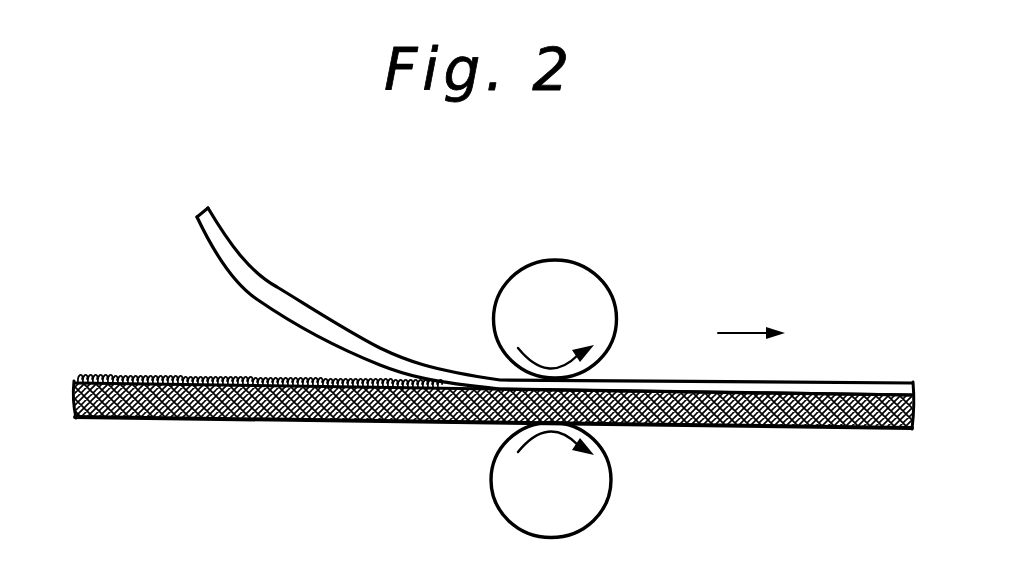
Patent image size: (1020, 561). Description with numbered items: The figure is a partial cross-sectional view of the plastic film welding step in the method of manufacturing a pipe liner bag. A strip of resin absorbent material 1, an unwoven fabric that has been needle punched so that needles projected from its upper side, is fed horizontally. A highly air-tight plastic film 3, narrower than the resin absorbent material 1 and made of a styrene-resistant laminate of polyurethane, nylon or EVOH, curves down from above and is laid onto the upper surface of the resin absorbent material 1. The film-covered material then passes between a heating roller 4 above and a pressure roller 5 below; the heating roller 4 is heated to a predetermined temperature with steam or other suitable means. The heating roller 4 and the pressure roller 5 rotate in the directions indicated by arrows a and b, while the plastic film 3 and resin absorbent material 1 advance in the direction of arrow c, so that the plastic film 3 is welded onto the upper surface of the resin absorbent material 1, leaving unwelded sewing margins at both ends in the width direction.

The resin absorbent material 1 is at (255, 421).
The plastic film 3 is at (277, 303).
The heating roller 4 is at (607, 289).
The pressure roller 5 is at (600, 525).
The arrow indicating rotation direction of heating roller a is at (556, 347).
The arrow indicating rotation direction of pressure roller b is at (556, 457).
The arrow indicating feed direction c is at (751, 317).